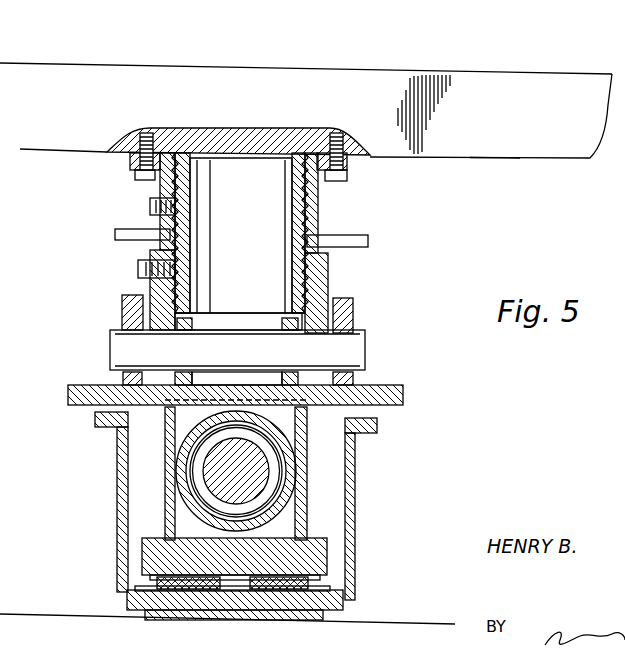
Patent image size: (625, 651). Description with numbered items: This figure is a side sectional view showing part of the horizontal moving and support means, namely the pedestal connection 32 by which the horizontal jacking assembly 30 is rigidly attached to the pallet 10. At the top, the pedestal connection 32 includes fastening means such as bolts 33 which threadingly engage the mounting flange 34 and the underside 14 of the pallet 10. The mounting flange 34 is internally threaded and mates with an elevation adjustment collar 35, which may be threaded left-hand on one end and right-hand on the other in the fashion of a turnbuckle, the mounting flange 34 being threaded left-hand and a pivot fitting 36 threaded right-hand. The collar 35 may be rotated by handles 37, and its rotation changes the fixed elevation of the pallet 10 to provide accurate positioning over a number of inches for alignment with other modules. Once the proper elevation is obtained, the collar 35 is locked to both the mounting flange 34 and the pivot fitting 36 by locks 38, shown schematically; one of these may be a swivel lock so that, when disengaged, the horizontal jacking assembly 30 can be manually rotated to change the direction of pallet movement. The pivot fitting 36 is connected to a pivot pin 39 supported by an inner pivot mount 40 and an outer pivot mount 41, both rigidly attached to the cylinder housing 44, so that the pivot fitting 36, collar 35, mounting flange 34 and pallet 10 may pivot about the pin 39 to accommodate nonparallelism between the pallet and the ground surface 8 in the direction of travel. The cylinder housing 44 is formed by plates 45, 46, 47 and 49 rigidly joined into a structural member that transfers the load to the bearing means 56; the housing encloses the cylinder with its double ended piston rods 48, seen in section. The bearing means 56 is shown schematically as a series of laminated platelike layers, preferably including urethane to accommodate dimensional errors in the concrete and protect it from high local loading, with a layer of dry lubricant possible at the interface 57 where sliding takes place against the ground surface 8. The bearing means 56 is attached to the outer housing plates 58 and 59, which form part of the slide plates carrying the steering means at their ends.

The ground surface 8 is at (410, 623).
The pallet 10 is at (513, 99).
The underside of pallet 14 is at (486, 160).
The horizontal jacking assembly 30 is at (422, 286).
The pedestal connection 32 is at (375, 236).
The bolts 33 is at (135, 162).
The mounting flange 34 is at (305, 203).
The elevation adjustment collar 35 is at (330, 266).
The pivot fitting 36 is at (325, 292).
The handles 37 is at (115, 236).
The locks 38 is at (152, 206).
The pivot pin 39 is at (115, 350).
The inner pivot mount 40 is at (295, 324).
The outer pivot mount 41 is at (122, 312).
The cylinder housing 44 is at (262, 473).
The plate 45 is at (403, 396).
The plate 46 is at (165, 488).
The plate 47 is at (305, 512).
The piston rods 48 is at (270, 466).
The plate 49 is at (322, 566).
The bearing means 56 is at (328, 584).
The interface 57 is at (140, 612).
The outer housing plate 58 is at (118, 532).
The outer housing plate 59 is at (356, 532).